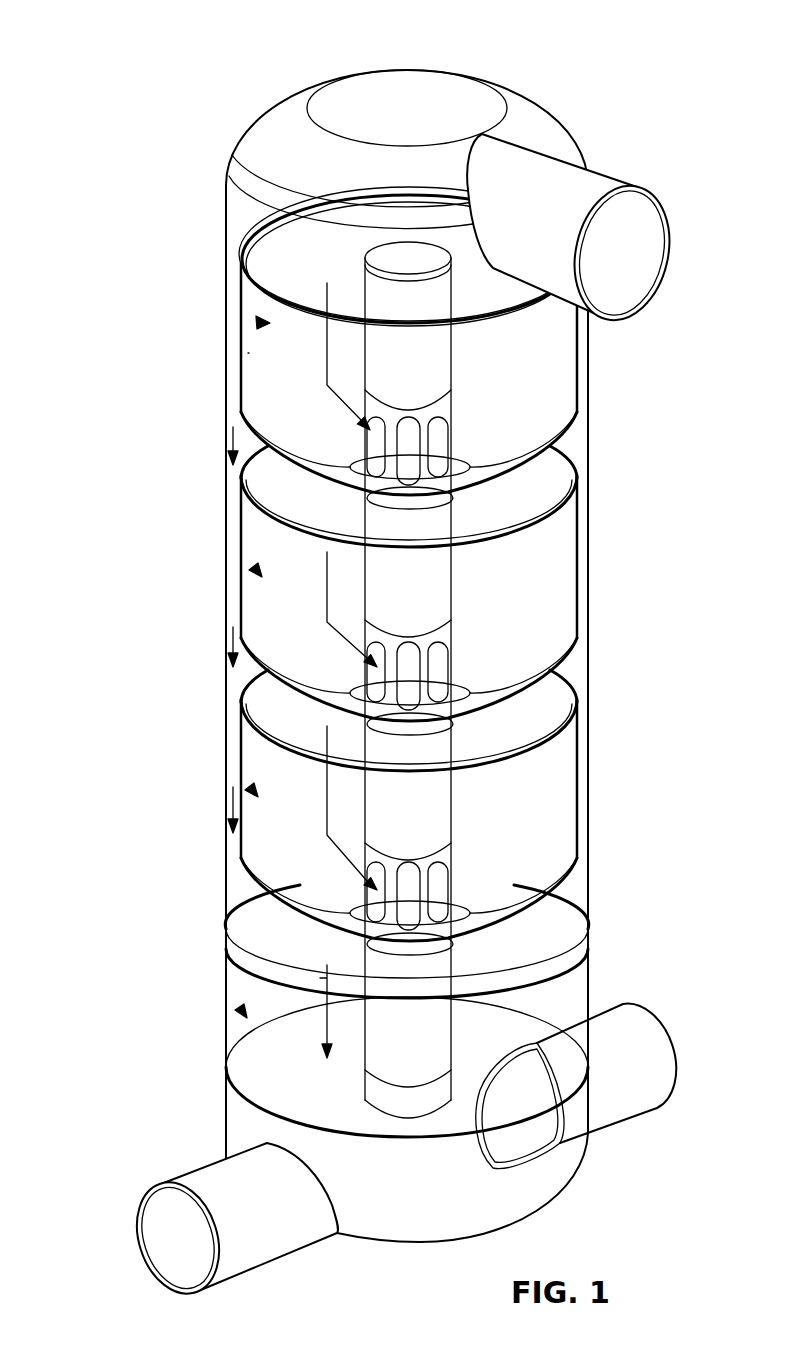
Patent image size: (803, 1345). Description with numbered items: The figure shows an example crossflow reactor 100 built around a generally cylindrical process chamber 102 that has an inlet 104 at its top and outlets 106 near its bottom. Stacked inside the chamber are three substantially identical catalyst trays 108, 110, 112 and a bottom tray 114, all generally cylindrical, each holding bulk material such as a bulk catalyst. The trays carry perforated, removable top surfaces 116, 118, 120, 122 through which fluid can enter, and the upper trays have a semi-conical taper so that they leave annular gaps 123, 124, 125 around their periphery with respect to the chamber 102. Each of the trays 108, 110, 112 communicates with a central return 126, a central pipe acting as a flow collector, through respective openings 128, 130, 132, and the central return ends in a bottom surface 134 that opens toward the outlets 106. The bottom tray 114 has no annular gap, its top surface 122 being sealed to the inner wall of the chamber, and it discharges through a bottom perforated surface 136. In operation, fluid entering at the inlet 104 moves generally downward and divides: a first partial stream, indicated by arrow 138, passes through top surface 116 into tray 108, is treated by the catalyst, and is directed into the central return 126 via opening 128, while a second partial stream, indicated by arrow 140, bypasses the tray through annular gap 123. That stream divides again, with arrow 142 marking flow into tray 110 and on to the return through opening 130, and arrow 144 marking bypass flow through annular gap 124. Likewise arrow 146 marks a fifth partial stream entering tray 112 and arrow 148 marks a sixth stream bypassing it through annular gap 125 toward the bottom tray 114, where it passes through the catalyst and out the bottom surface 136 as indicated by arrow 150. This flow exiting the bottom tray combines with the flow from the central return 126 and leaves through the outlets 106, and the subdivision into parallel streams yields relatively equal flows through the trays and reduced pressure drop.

The crossflow reactor 100 is at (142, 36).
The process chamber 102 is at (377, 84).
The inlet 104 is at (638, 187).
The outlets 106 is at (170, 1183).
The first tray 108 is at (256, 320).
The second tray 110 is at (253, 565).
The third tray 112 is at (248, 353).
The bottom tray 114 is at (240, 1007).
The top surface 116 is at (357, 348).
The top surface 118 is at (404, 590).
The top surface 120 is at (404, 808).
The top surface 122 is at (248, 933).
The annular gap 123 is at (235, 390).
The annular gap 124 is at (238, 605).
The annular gap 125 is at (238, 740).
The central return 126 is at (440, 386).
The opening 128 is at (365, 430).
The opening 130 is at (365, 655).
The opening 132 is at (365, 878).
The bottom surface 134 is at (410, 1120).
The bottom perforated surface 136 is at (272, 1070).
The arrow 138 is at (327, 283).
The arrow 140 is at (233, 430).
The arrow 142 is at (327, 552).
The arrow 144 is at (233, 640).
The arrow 146 is at (327, 726).
The arrow 148 is at (233, 790).
The arrow 150 is at (320, 978).